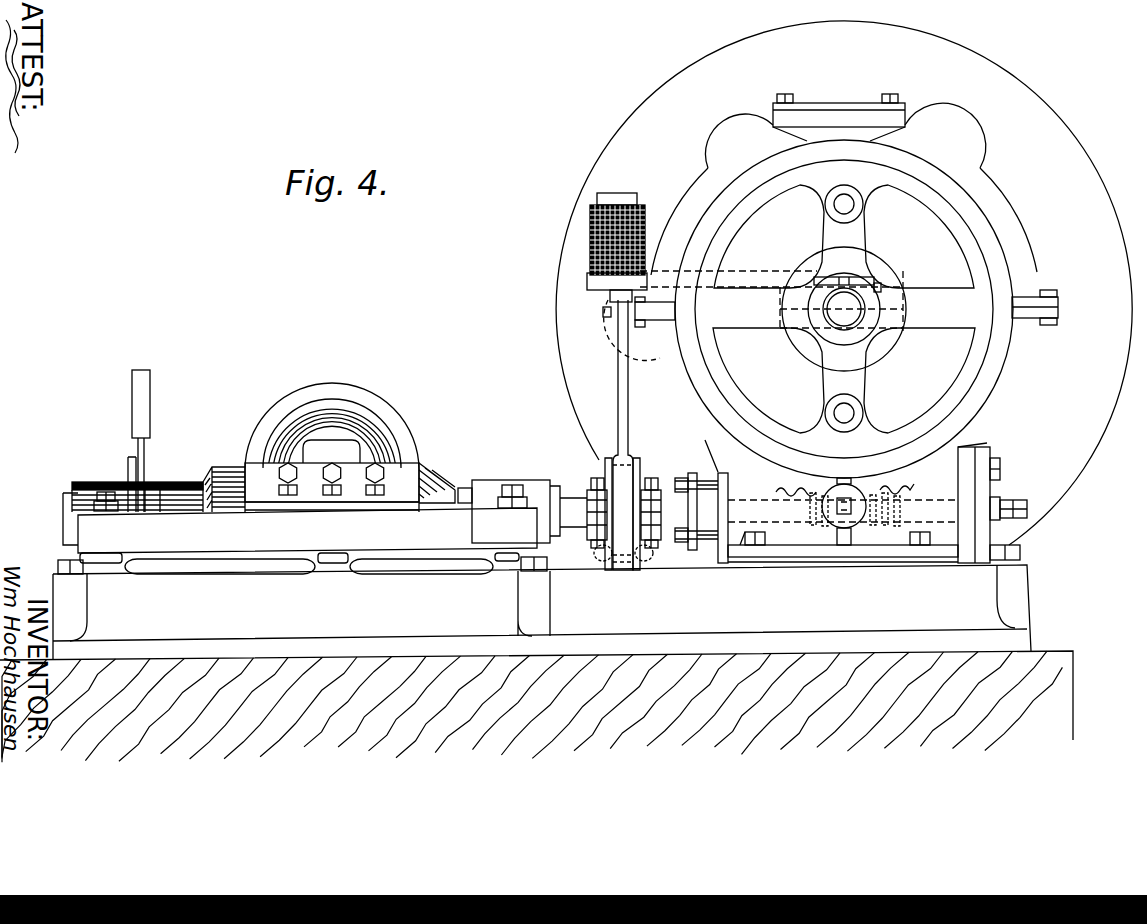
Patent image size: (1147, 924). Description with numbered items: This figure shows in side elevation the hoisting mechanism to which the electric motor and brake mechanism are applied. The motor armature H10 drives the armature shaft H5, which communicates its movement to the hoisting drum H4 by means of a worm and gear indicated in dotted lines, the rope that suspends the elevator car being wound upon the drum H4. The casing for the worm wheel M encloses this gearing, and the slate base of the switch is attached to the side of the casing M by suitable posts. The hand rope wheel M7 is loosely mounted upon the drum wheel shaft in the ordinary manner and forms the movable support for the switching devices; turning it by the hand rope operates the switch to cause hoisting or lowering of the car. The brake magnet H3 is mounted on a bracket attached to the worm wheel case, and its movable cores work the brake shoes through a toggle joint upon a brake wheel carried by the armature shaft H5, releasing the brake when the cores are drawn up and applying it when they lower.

The brake magnet H3 is at (622, 194).
The hoisting drum H4 is at (1026, 374).
The armature shaft H5 is at (567, 508).
The armature H10 is at (439, 478).
The casing for the worm wheel M is at (1016, 222).
The hand rope wheel M7 is at (998, 282).